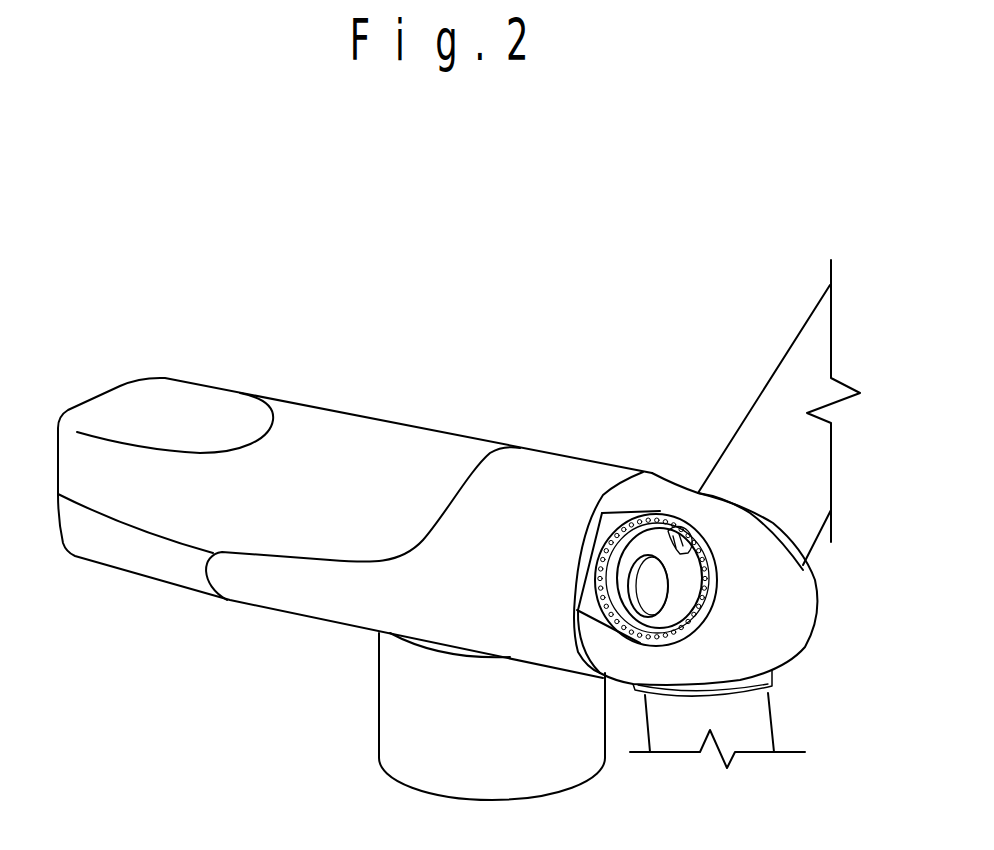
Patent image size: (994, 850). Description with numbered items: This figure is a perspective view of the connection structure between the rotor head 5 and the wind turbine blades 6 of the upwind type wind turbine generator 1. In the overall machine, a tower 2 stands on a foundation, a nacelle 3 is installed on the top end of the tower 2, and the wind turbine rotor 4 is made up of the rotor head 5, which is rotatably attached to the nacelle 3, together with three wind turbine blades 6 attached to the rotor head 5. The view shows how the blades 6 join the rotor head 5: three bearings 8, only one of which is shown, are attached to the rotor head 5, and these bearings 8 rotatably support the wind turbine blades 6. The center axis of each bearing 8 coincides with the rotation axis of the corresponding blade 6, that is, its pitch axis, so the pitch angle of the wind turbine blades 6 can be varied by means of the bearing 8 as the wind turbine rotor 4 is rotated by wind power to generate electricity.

The wind turbine generator 1 is at (218, 238).
The tower 2 is at (388, 722).
The nacelle 3 is at (320, 420).
The wind turbine rotor 4 is at (680, 405).
The rotor head 5 is at (807, 617).
The wind turbine blade 6 is at (780, 372).
The bearing 8 is at (707, 593).